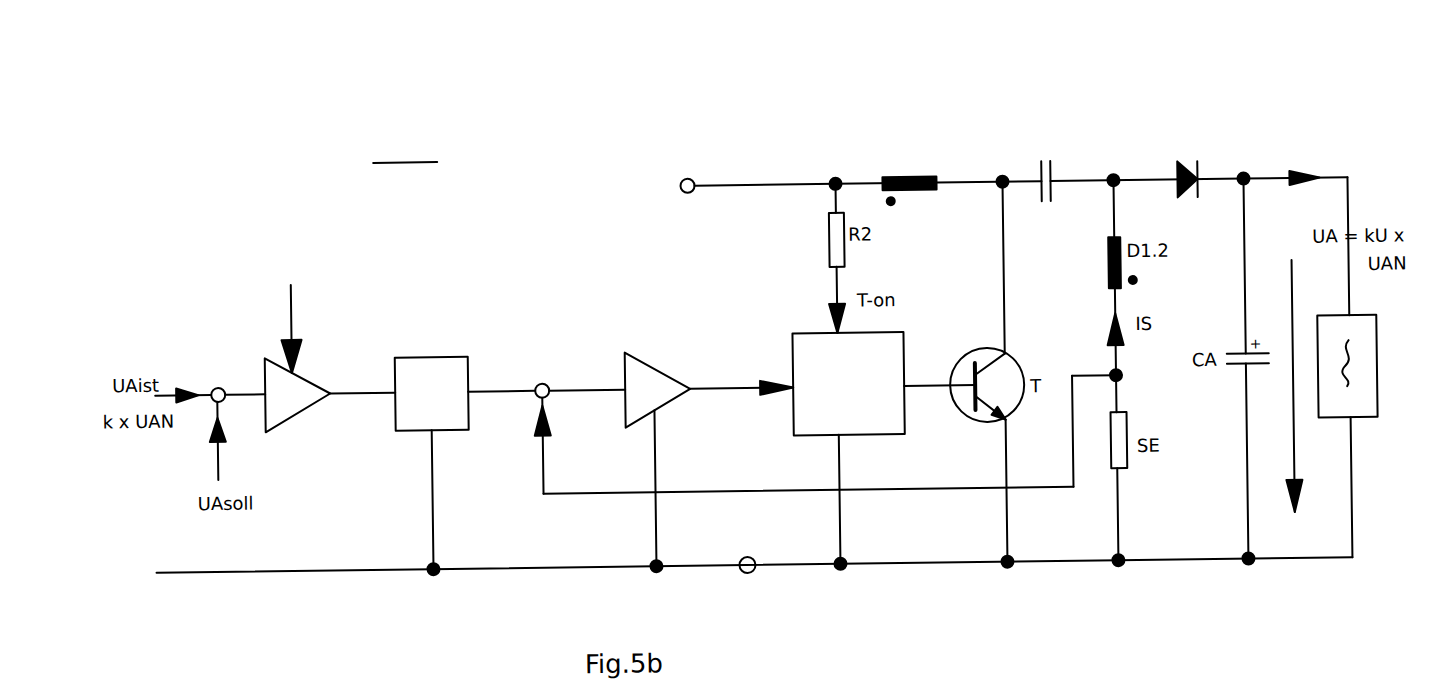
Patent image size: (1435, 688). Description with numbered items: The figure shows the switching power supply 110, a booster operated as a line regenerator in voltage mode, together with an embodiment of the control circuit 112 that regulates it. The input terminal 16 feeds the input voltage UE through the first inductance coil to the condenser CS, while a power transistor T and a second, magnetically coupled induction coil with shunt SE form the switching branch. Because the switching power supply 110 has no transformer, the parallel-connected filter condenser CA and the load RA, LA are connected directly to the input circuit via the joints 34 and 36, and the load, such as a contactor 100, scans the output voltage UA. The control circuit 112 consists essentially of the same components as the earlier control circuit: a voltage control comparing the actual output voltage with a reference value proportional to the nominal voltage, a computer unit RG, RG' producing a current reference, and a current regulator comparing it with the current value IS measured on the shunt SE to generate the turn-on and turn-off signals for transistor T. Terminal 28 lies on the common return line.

The input terminal 16 is at (739, 163).
The switching power supply 110 is at (987, 148).
The control circuit 112 is at (423, 326).
The joint 34 is at (1246, 178).
The joint 36 is at (1246, 572).
The ground input terminal 28 is at (745, 573).
The contactors 100 is at (1357, 420).